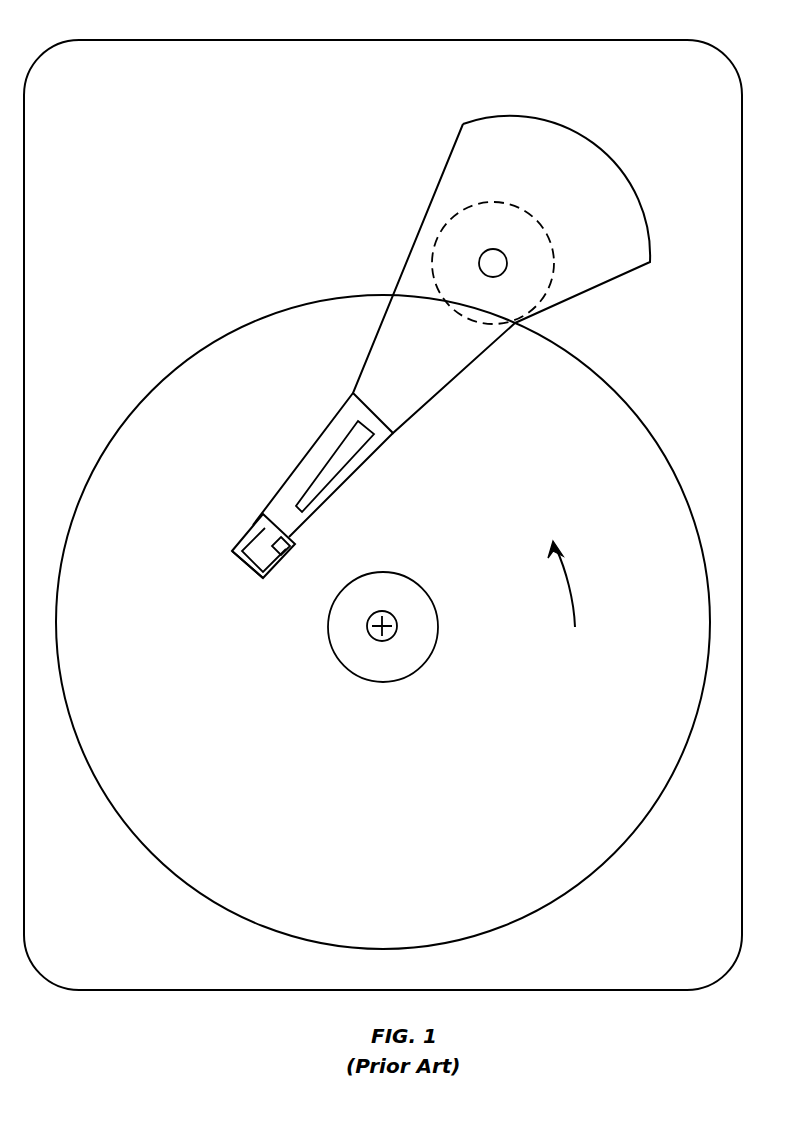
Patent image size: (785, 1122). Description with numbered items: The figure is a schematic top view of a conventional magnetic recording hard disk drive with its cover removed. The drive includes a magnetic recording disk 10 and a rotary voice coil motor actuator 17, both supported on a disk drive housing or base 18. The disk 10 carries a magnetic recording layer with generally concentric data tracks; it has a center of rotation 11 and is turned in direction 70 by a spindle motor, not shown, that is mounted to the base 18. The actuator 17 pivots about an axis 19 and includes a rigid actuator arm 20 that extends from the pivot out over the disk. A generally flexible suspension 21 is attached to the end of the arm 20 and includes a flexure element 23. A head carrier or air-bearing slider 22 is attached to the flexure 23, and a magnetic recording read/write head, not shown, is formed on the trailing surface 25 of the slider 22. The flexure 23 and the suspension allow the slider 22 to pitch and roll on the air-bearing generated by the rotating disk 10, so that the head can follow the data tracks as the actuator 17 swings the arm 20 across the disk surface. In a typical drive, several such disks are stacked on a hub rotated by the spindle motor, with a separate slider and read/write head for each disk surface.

The magnetic recording disk 10 is at (593, 870).
The center of rotation 11 is at (397, 618).
The rotary voice coil motor (VCM) actuator 17 is at (590, 148).
The disk drive housing or base 18 is at (628, 40).
The axis 19 is at (487, 263).
The rigid actuator arm 20 is at (380, 350).
The suspension 21 is at (335, 425).
The head carrier or air-bearing slider 22 is at (255, 523).
The flexure element 23 is at (283, 554).
The trailing surface 25 is at (234, 554).
The direction of rotation 70 is at (573, 597).